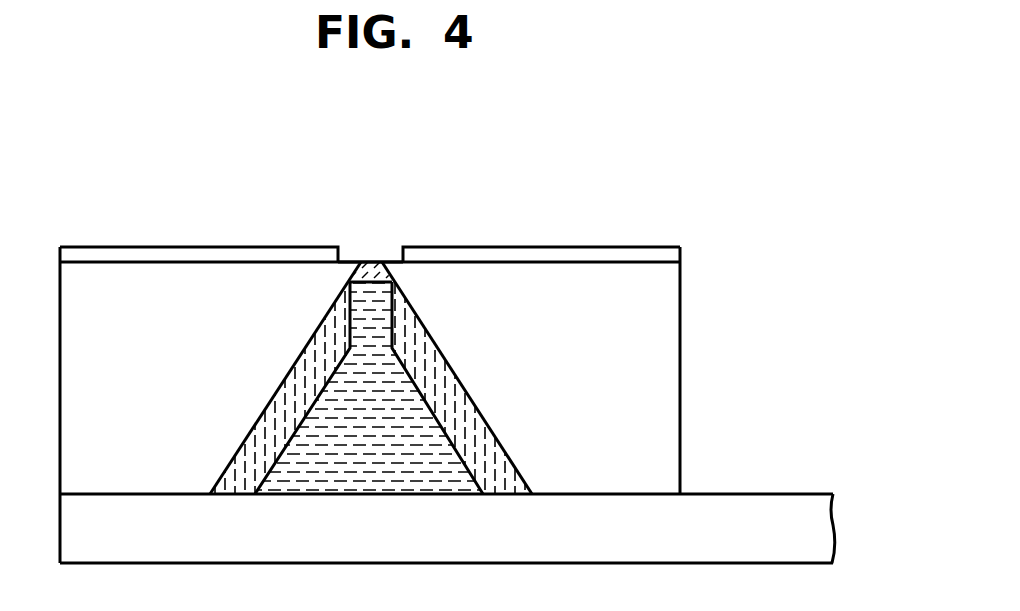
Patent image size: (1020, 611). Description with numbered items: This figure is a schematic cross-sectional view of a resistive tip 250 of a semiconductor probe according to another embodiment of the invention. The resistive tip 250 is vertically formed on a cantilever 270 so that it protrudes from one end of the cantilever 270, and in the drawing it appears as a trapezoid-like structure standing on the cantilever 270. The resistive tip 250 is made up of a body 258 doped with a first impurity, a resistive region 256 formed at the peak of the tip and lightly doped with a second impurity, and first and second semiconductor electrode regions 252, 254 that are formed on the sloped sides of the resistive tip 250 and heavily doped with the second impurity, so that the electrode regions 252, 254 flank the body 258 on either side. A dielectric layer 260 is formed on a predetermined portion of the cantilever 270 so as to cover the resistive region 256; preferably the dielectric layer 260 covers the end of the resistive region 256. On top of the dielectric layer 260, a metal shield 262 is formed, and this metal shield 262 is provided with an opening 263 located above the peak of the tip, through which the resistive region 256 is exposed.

The resistive tip 250 is at (326, 315).
The first semiconductor electrode region 252 is at (297, 359).
The second semiconductor electrode region 254 is at (472, 398).
The resistive region 256 is at (372, 262).
The body 258 is at (393, 456).
The dielectric layer 260 is at (668, 374).
The metal shield 262 is at (627, 247).
The opening 263 is at (400, 254).
The cantilever 270 is at (766, 505).